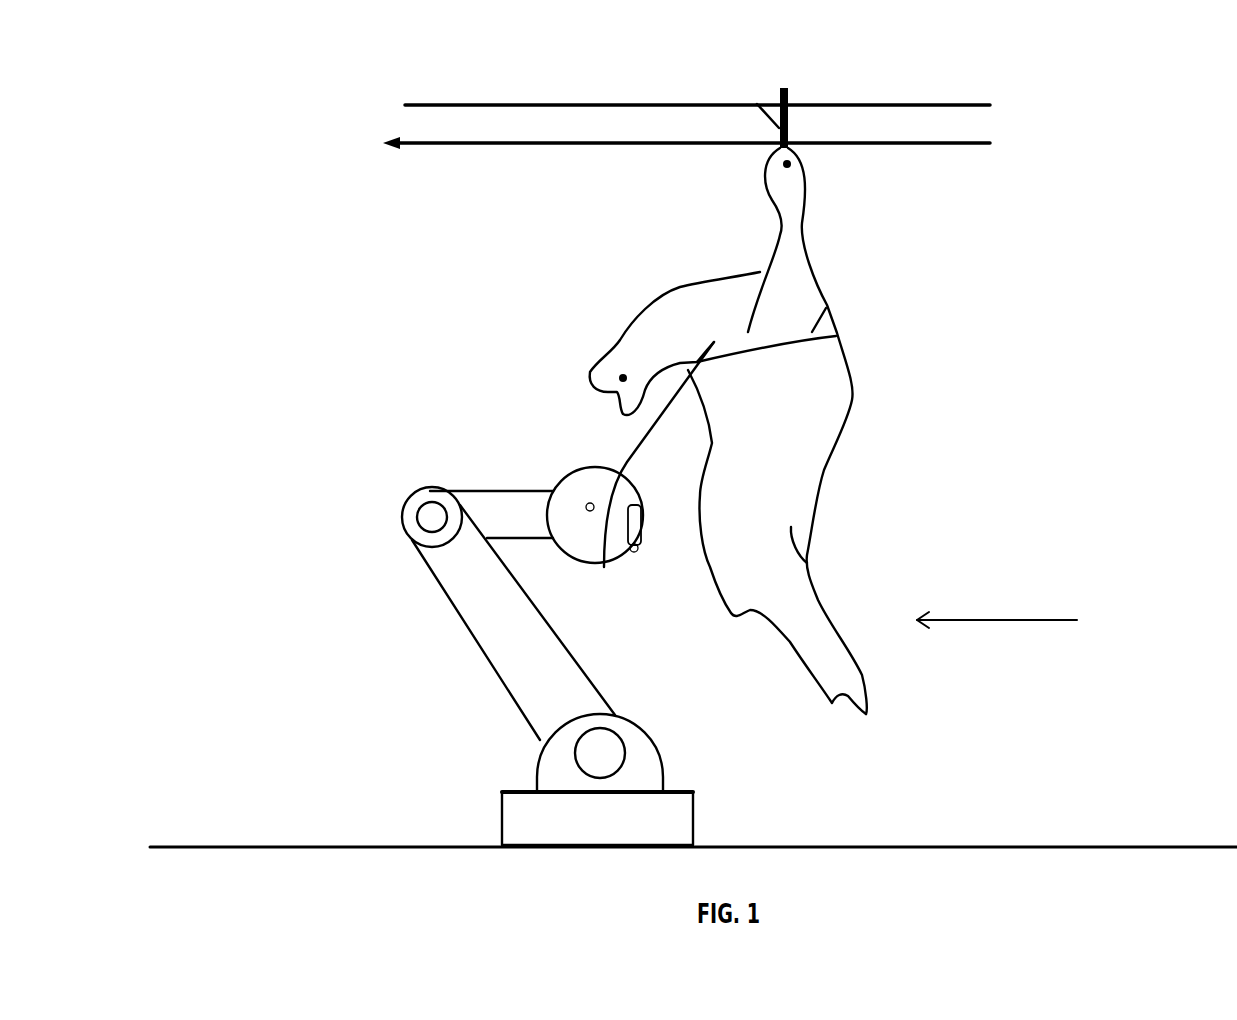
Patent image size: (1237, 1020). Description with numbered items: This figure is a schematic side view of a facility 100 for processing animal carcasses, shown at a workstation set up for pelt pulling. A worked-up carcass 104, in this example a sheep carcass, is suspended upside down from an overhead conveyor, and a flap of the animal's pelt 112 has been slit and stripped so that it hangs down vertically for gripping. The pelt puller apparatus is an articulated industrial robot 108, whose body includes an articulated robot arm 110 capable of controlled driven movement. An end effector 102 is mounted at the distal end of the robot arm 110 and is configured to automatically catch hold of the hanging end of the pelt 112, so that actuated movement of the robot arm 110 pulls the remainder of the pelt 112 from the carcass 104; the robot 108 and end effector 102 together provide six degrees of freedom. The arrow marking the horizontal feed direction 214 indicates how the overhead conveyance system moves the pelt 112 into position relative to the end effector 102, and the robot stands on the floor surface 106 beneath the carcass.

The facility 100 is at (928, 58).
The end effector 102 is at (576, 538).
The carcass 104 is at (833, 400).
The floor 106 is at (332, 847).
The articulated industrial robot 108 is at (506, 665).
The robot arm 110 is at (510, 508).
The pelt 112 is at (641, 443).
The feed direction 214 is at (997, 600).